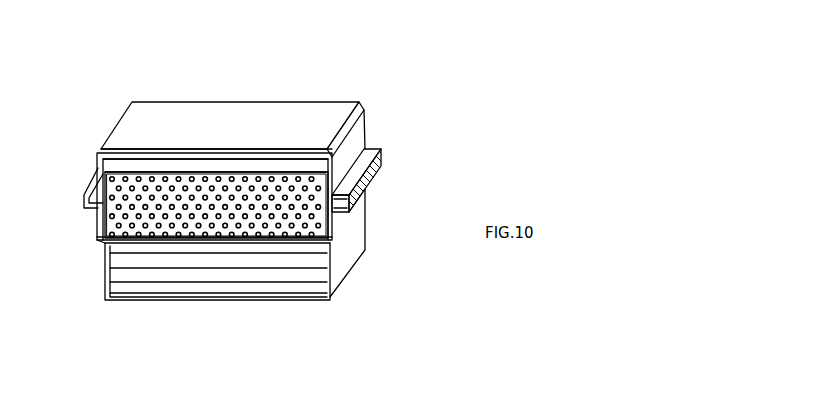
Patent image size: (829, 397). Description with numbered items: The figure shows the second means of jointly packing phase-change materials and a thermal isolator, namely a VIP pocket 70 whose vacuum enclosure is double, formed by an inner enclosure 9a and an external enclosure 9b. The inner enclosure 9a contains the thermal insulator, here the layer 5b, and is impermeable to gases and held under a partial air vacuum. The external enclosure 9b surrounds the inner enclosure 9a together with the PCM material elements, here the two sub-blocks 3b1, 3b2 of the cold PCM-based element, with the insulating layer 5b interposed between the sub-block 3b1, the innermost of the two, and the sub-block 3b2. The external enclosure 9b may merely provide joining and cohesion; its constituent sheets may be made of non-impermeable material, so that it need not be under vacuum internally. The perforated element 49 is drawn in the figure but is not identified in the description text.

The inner enclosure 9a is at (138, 165).
The external enclosure 9b is at (91, 275).
The sub-block 3b1 is at (225, 158).
The sub-block 3b2 is at (205, 258).
The perforated vent plate 49 is at (292, 168).
The thermal insulator layer 5b is at (282, 217).
The VIP pocket 70 is at (376, 223).